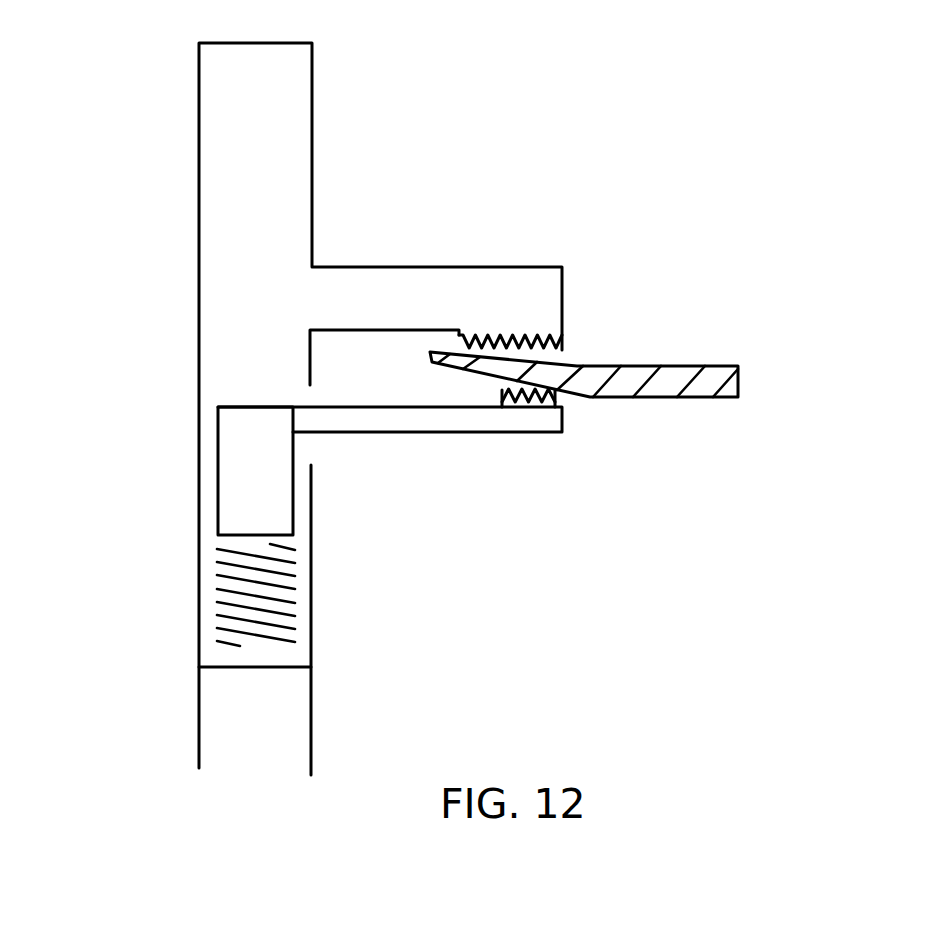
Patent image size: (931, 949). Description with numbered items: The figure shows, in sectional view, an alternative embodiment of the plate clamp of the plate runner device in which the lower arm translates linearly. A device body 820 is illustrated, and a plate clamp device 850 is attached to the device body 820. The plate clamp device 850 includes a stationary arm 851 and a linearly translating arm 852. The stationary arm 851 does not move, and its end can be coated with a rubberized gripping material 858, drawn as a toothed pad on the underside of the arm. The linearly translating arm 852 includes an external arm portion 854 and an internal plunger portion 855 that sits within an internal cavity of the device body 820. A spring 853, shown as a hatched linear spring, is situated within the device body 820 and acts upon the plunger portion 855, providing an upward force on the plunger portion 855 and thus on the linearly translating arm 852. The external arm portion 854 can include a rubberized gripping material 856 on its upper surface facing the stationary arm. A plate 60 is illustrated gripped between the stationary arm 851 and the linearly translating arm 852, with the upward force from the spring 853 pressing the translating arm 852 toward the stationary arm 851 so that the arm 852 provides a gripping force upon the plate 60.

The device body 820 is at (303, 116).
The plate clamp device 850 is at (490, 94).
The stationary arm 851 is at (490, 272).
The linearly translating arm 852 is at (365, 432).
The spring 853 is at (217, 590).
The external arm portion 854 is at (438, 423).
The internal plunger portion 855 is at (223, 447).
The rubberized gripping material 856 is at (555, 393).
The rubberized gripping material 858 is at (562, 340).
The plate 60 is at (652, 383).